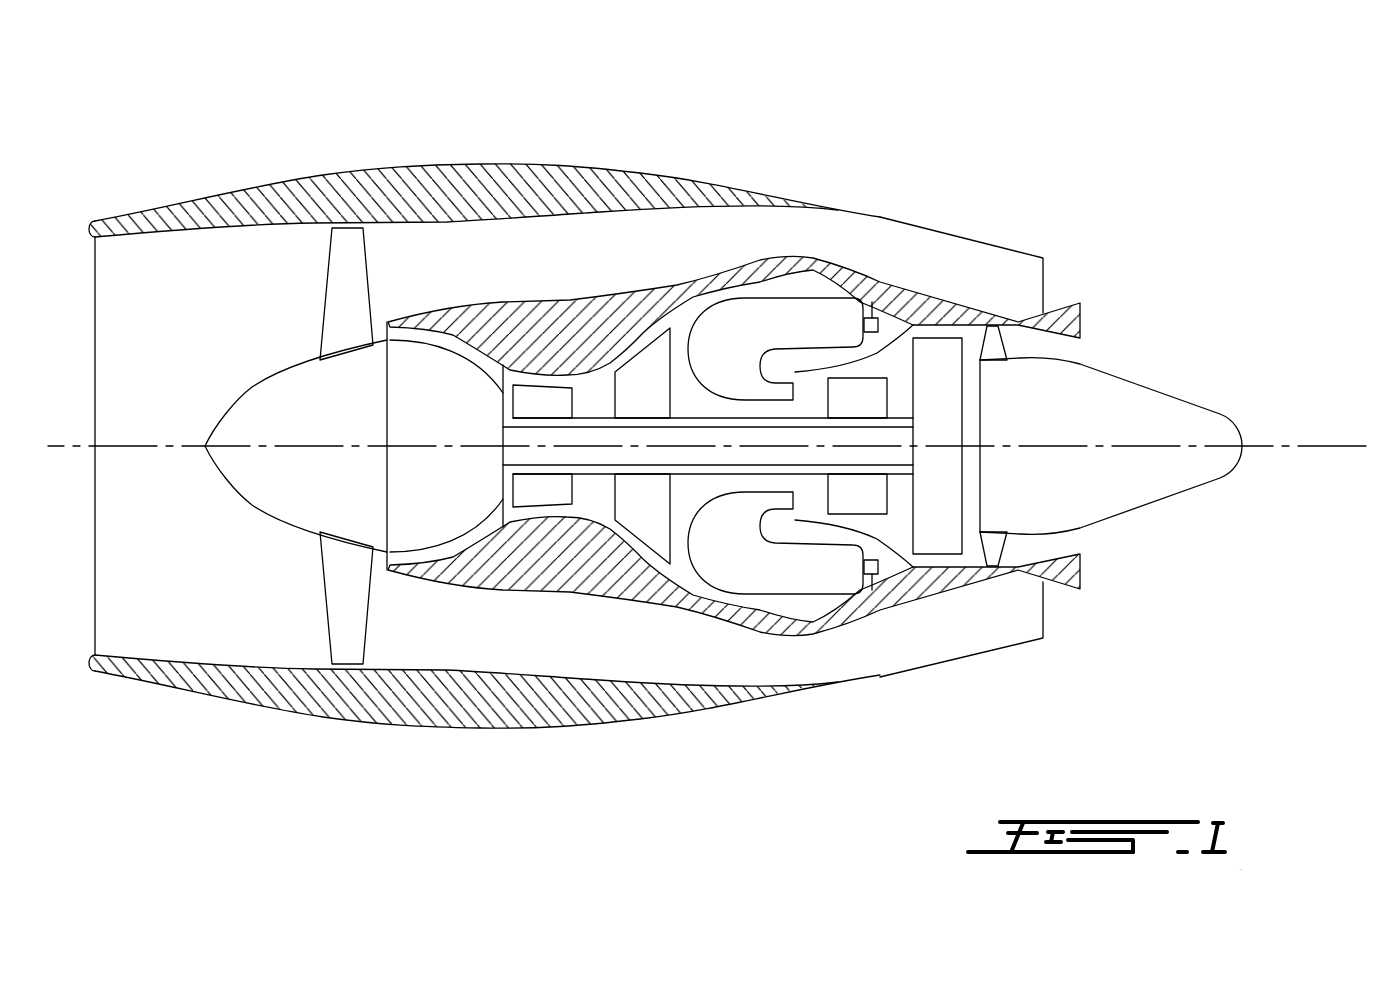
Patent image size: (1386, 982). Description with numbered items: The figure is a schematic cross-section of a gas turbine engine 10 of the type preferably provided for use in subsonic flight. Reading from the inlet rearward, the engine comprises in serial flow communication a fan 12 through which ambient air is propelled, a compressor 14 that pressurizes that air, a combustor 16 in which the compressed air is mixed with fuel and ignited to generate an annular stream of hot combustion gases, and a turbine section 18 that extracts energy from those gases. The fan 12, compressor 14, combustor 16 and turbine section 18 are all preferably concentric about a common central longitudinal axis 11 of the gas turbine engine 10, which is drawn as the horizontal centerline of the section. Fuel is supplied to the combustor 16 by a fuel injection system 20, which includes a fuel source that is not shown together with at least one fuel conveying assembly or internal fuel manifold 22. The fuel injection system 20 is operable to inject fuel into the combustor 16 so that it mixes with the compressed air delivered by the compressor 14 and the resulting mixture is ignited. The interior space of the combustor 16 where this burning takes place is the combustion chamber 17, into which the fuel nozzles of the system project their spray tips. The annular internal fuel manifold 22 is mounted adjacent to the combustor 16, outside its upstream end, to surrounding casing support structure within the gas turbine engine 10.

The gas turbine engine 10 is at (865, 165).
The central longitudinal axis 11 is at (1330, 446).
The fan 12 is at (342, 587).
The compressor 14 is at (590, 392).
The combustor 16 is at (773, 297).
The combustion chamber 17 is at (816, 582).
The turbine section 18 is at (900, 363).
The fuel injection system 20 is at (888, 313).
The internal fuel manifold 22 is at (880, 574).